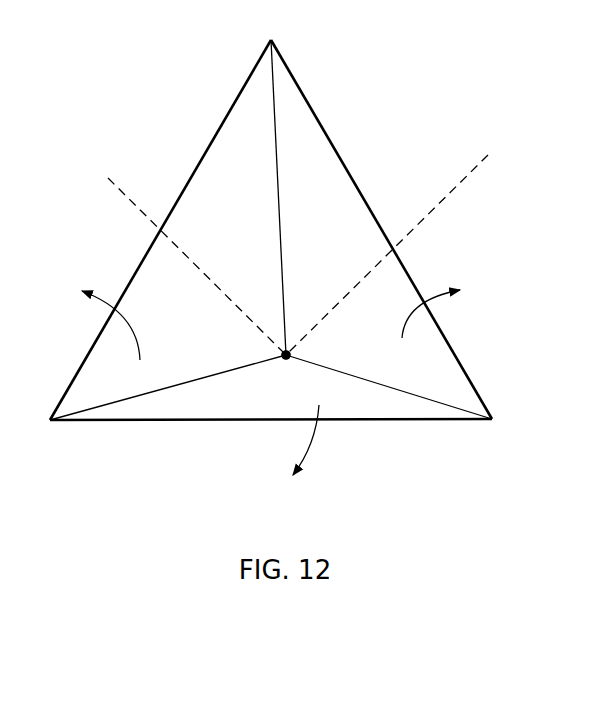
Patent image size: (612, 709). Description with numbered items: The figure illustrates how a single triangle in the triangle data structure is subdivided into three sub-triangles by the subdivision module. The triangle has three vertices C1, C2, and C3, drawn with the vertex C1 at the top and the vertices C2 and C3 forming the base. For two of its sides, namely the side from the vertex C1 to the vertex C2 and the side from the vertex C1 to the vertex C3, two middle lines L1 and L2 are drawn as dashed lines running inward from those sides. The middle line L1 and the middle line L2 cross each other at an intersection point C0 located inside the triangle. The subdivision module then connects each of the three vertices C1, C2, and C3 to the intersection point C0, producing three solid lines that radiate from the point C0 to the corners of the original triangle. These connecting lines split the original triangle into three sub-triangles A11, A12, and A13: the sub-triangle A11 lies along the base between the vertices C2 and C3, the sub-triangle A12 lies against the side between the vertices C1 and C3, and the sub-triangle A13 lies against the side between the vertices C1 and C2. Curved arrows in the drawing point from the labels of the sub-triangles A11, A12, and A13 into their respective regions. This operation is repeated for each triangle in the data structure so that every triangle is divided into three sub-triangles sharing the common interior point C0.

The intersection point C0 is at (289, 367).
The vertex C1 is at (271, 219).
The vertex C2 is at (262, 405).
The vertex C3 is at (410, 401).
The middle line L1 is at (183, 264).
The middle line L2 is at (408, 252).
The sub-triangle A11 is at (286, 452).
The sub-triangle A12 is at (459, 309).
The sub-triangle A13 is at (88, 319).